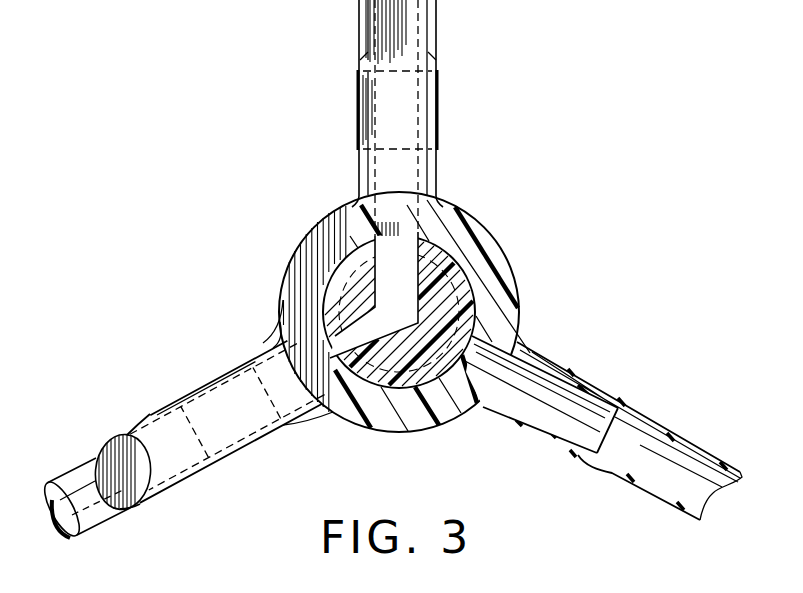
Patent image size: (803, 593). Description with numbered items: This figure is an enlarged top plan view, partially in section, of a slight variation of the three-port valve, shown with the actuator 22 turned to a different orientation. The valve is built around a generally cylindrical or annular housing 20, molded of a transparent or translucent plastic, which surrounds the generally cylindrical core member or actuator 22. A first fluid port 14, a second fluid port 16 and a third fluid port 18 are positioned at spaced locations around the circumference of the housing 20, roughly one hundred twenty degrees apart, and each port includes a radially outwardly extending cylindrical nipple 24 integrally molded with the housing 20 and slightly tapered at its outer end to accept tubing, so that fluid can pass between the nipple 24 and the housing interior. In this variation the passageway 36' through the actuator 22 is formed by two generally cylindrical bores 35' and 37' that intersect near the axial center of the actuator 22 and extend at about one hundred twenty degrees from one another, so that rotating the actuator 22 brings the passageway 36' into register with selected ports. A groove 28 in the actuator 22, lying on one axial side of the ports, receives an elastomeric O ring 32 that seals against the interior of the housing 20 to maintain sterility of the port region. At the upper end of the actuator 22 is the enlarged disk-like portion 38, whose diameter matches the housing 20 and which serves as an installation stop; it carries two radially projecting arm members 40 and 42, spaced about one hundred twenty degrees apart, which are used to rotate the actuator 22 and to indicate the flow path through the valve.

The first fluid port 14 is at (522, 397).
The second fluid port 16 is at (265, 345).
The third fluid port 18 is at (437, 193).
The housing 20 is at (487, 275).
The actuator 22 is at (485, 291).
The nipple 24 is at (436, 106).
The groove 28 is at (462, 222).
The O ring 32 is at (478, 250).
The cylindrical bore 35' is at (497, 233).
The passageway 36' is at (330, 290).
The cylindrical bore 37' is at (351, 415).
The disk-like portion 38 is at (325, 232).
The arm member 40 is at (376, 25).
The arm member 42 is at (197, 403).